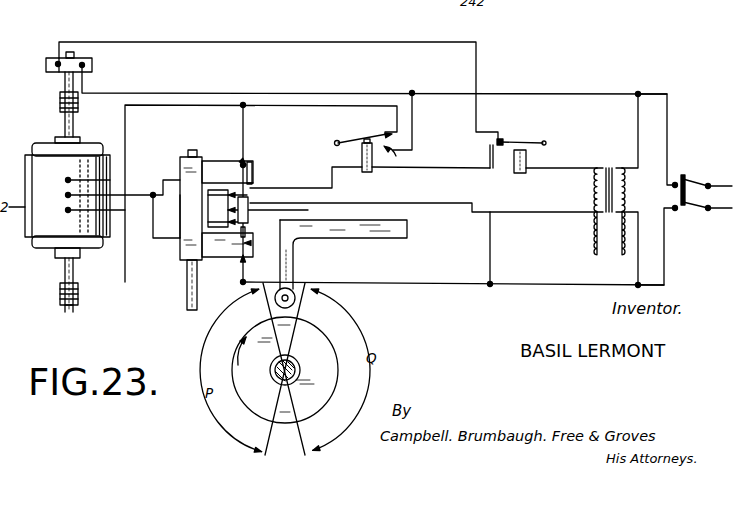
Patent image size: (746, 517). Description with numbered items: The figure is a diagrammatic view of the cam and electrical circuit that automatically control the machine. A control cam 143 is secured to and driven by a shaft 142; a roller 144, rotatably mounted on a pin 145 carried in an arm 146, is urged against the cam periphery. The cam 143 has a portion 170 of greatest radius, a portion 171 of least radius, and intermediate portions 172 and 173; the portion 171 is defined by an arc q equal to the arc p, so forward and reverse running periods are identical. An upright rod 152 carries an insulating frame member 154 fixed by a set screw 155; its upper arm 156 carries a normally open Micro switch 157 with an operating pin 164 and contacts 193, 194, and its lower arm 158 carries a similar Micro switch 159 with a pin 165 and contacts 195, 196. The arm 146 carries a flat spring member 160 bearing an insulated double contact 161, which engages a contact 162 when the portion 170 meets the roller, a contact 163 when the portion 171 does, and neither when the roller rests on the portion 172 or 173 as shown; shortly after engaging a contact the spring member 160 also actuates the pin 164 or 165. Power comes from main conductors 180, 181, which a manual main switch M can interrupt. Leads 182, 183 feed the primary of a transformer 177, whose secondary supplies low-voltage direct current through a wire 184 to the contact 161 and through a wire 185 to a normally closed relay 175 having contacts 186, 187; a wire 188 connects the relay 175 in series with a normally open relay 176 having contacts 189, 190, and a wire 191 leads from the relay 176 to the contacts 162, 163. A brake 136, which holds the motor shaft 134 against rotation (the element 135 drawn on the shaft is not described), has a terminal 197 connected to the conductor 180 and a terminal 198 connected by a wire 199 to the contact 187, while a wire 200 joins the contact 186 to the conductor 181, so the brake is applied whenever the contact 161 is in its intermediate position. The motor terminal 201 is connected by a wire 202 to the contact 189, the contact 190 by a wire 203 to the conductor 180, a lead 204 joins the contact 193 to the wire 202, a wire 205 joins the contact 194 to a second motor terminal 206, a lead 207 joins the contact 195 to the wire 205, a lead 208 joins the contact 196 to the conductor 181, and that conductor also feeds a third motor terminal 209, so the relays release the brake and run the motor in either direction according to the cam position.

The motor shaft 134 is at (67, 306).
The adjusting nuts 135 is at (60, 101).
The brake 136 is at (46, 65).
The shaft 142 is at (293, 365).
The control cam 143 is at (285, 370).
The roller 144 is at (303, 286).
The pin 145 is at (274, 303).
The arm 146 is at (395, 239).
The upright rod 152 is at (187, 300).
The frame member 154 is at (185, 158).
The set screw 155 is at (166, 216).
The upper arm 156 is at (218, 160).
The Micro switch 157 is at (254, 168).
The lower arm 158 is at (226, 257).
The Micro switch 159 is at (202, 249).
The flat spring member 160 is at (282, 213).
The double contact 161 is at (209, 208).
The contact 162 is at (215, 193).
The contact 163 is at (215, 227).
The operating pin 164 is at (253, 183).
The operating pin 165 is at (246, 232).
The cam portion 170 is at (228, 367).
The cam portion 171 is at (340, 369).
The cam portion 172 is at (297, 316).
The cam portion 173 is at (277, 443).
The relay 175 is at (526, 173).
The relay 176 is at (372, 170).
The transformer 177 is at (604, 218).
The main conductor 180 is at (665, 93).
The main conductor 181 is at (660, 283).
The lead 182 is at (638, 120).
The lead 183 is at (637, 266).
The wire 184 is at (430, 203).
The wire 185 is at (577, 168).
The contact 186 is at (507, 152).
The contact 187 is at (501, 140).
The wire 188 is at (447, 166).
The contact 189 is at (386, 132).
The contact 190 is at (402, 158).
The wire 191 is at (333, 189).
The contact 193 is at (246, 165).
The contact 194 is at (217, 172).
The contact 195 is at (248, 243).
The contact 196 is at (244, 259).
The terminal 197 is at (85, 65).
The terminal 198 is at (57, 63).
The wire 199 is at (263, 42).
The wire 200 is at (492, 250).
The terminal 201 is at (66, 179).
The wire 202 is at (125, 117).
The wire 203 is at (414, 121).
The lead 204 is at (246, 117).
The wire 205 is at (158, 188).
The terminal 206 is at (66, 194).
The lead 207 is at (153, 228).
The lead 208 is at (241, 284).
The terminal 209 is at (66, 211).
The main switch M is at (683, 175).